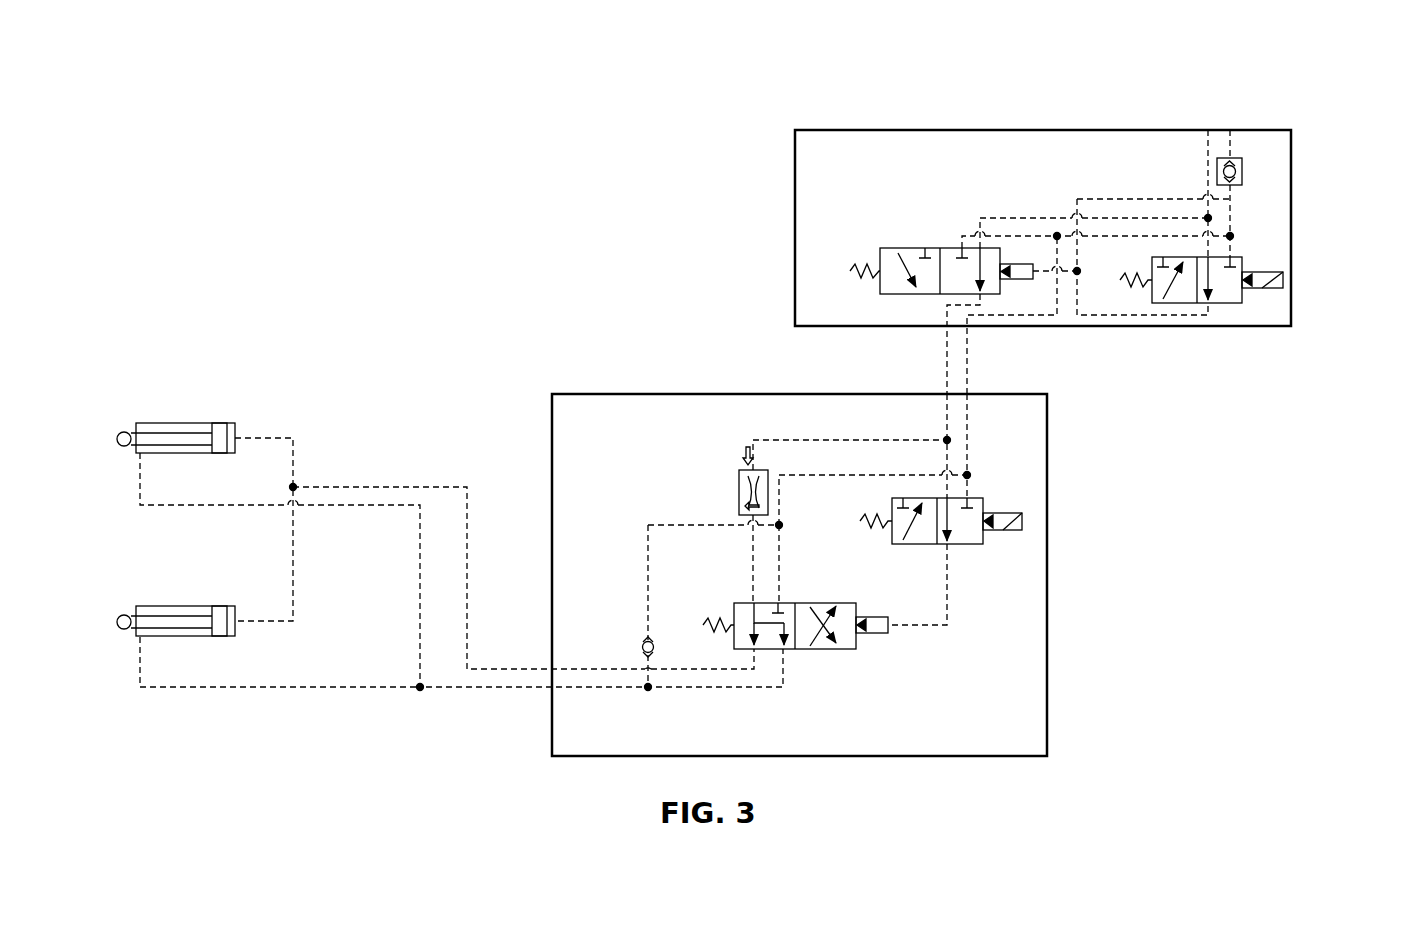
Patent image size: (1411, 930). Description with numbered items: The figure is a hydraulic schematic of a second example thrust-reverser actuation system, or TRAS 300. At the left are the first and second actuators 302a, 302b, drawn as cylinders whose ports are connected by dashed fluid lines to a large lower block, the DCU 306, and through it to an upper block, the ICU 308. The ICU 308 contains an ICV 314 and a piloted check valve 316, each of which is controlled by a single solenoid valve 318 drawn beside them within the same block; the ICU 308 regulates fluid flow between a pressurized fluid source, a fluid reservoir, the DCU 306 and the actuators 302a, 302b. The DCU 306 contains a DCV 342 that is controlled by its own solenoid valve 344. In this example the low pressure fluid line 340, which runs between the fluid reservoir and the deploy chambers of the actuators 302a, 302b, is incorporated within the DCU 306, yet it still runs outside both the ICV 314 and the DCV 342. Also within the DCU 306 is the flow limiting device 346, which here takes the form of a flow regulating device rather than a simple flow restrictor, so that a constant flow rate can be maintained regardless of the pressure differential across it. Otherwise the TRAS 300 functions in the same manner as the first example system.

The thrust-reverser actuation system 300 is at (520, 85).
The first actuator 302a is at (186, 372).
The second actuator 302b is at (186, 560).
The DCU 306 is at (1047, 437).
The ICU 308 is at (1291, 195).
The ICV 314 is at (862, 247).
The piloted check valve 316 is at (1245, 175).
The solenoid valve 318 is at (1250, 265).
The low pressure fluid line 340 is at (853, 440).
The DCV 342 is at (808, 597).
The solenoid valve 344 is at (985, 495).
The flow limiting device 346 is at (735, 483).